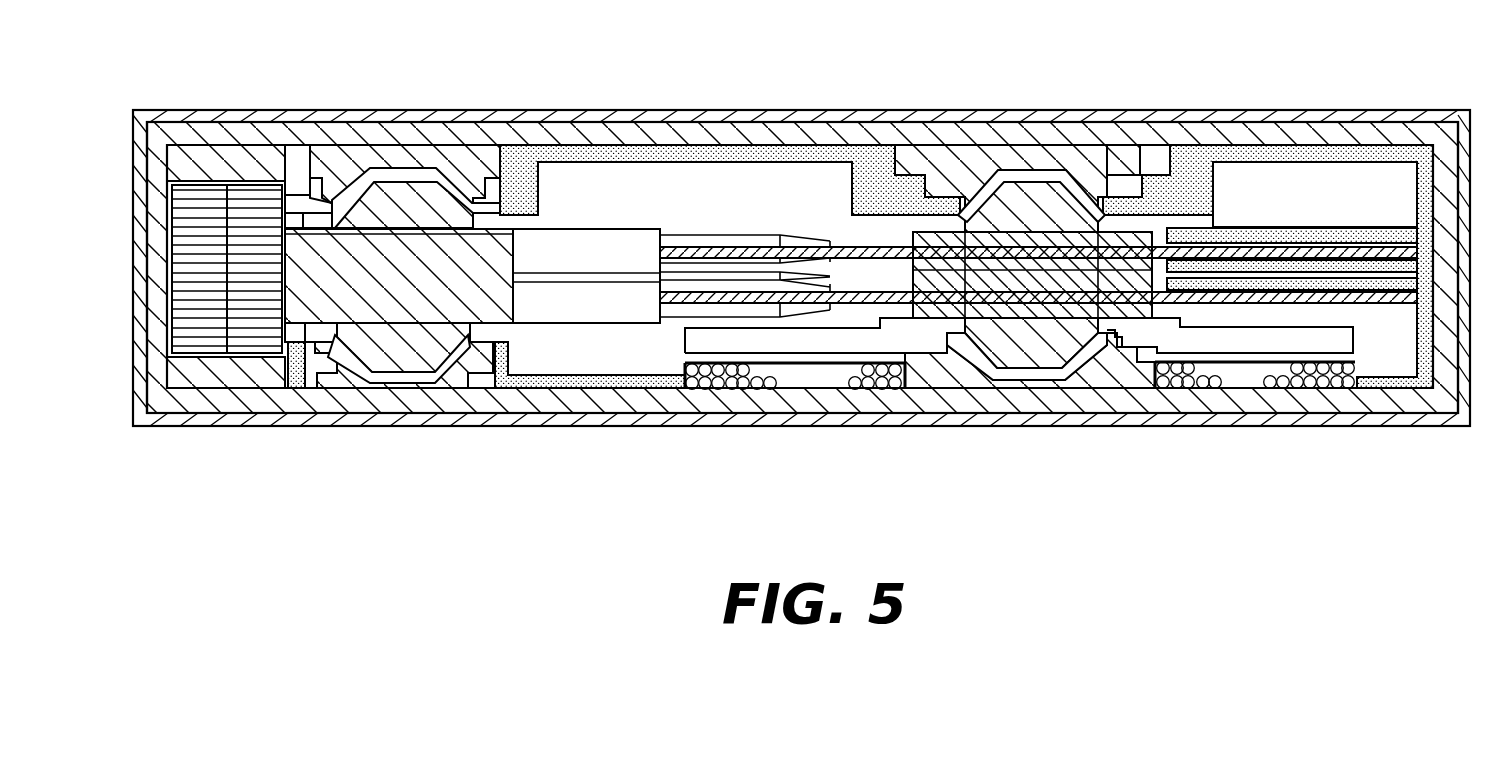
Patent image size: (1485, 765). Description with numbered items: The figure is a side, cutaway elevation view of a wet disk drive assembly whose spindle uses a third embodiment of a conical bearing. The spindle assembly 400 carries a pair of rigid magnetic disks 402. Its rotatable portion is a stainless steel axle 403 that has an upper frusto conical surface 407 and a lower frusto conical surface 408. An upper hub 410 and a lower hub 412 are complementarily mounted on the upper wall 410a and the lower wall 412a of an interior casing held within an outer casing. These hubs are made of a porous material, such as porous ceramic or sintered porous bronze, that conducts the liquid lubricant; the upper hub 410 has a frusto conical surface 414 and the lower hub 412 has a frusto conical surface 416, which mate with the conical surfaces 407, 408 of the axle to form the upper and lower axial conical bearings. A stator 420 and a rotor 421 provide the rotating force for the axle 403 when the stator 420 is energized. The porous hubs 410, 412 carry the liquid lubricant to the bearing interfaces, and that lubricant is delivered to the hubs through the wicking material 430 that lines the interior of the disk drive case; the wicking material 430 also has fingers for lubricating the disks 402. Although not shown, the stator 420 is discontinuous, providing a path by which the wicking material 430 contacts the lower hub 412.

The spindle assembly 400 is at (810, 208).
The rigid magnetic disks 402 is at (837, 262).
The stainless steel axle 403 is at (962, 213).
The upper frusto conical surface 407 is at (1078, 188).
The lower frusto conical surface 408 is at (963, 353).
The upper hub 410 is at (1143, 175).
The upper wall 410a is at (1168, 150).
The lower hub 412 is at (978, 382).
The lower wall 412a is at (878, 402).
The frusto conical surface 414 is at (1100, 205).
The frusto conical surface 416 is at (1005, 385).
The stator 420 is at (1187, 377).
The rotor 421 is at (1252, 343).
The wicking material 430 is at (877, 148).